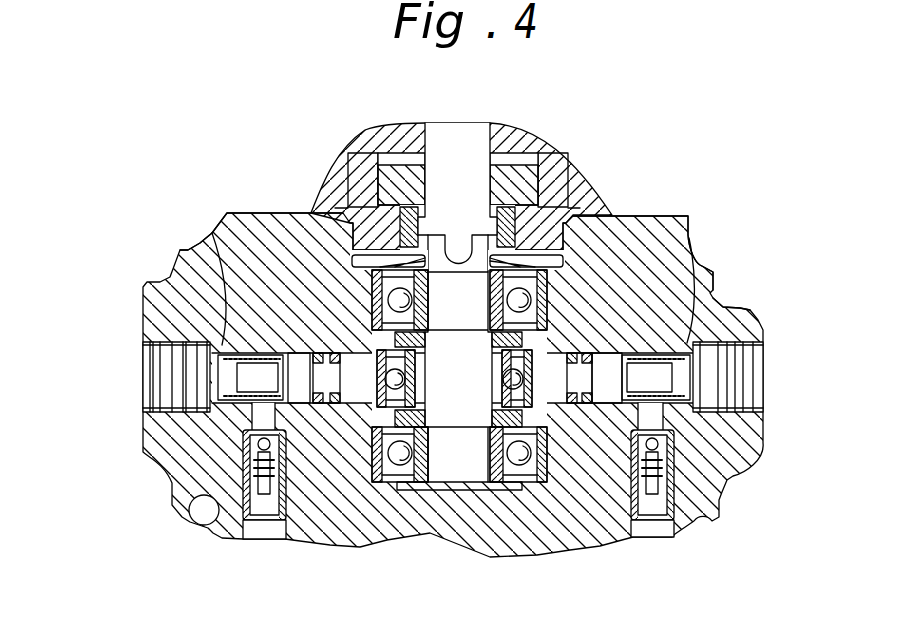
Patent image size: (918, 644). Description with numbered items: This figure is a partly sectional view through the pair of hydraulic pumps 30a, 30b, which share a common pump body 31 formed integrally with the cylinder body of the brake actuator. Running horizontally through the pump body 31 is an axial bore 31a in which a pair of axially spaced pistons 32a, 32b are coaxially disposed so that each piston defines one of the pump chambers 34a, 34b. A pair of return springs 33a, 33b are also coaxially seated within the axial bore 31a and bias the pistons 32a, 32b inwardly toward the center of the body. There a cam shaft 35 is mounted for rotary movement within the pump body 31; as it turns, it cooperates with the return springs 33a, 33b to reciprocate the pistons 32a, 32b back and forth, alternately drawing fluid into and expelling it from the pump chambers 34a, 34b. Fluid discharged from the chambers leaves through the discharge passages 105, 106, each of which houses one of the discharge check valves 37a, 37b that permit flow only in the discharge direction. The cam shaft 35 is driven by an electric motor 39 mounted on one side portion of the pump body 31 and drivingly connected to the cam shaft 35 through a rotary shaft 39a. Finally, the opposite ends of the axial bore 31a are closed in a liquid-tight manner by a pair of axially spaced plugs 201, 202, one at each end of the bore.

The hydraulic pump 30a is at (300, 310).
The hydraulic pump 30b is at (657, 323).
The pump body 31 is at (447, 523).
The axial bore 31a is at (356, 395).
The piston 32a is at (325, 358).
The piston 32b is at (607, 368).
The return spring 33a is at (195, 246).
The return spring 33b is at (712, 292).
The pump chamber 34a is at (225, 379).
The pump chamber 34b is at (680, 380).
The cam shaft 35 is at (473, 413).
The discharge check valve 37a is at (243, 461).
The discharge check valve 37b is at (727, 482).
The electric motor 39 is at (520, 125).
The rotary shaft 39a is at (458, 143).
The discharge passage 105 is at (266, 532).
The discharge passage 106 is at (655, 530).
The plug 201 is at (165, 400).
The plug 202 is at (745, 400).